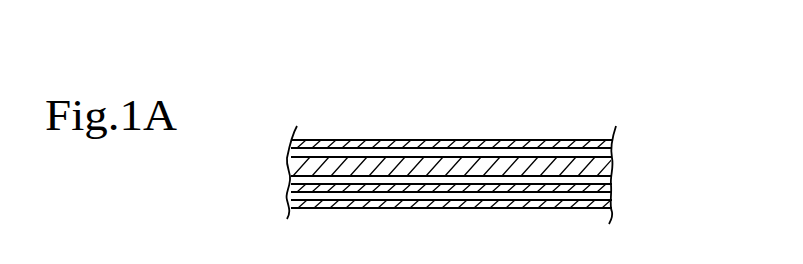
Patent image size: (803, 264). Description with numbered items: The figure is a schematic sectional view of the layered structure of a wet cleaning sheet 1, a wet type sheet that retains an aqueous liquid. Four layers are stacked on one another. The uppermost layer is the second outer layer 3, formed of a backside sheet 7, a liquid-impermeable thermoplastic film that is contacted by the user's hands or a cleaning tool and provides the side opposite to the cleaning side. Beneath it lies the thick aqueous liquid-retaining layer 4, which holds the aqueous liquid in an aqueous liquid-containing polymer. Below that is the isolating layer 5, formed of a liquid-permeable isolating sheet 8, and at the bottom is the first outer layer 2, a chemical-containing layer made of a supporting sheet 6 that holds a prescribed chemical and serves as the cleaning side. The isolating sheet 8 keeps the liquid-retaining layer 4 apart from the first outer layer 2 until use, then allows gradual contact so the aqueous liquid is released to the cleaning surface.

The wet cleaning sheet 1 is at (608, 112).
The first outer layer 2 is at (516, 210).
The second outer layer 3 is at (451, 103).
The aqueous liquid-retaining layer 4 is at (611, 170).
The isolating layer 5 is at (516, 175).
The supporting sheet 6 is at (608, 203).
The backside sheet 7 is at (562, 140).
The isolating sheet 8 is at (607, 188).